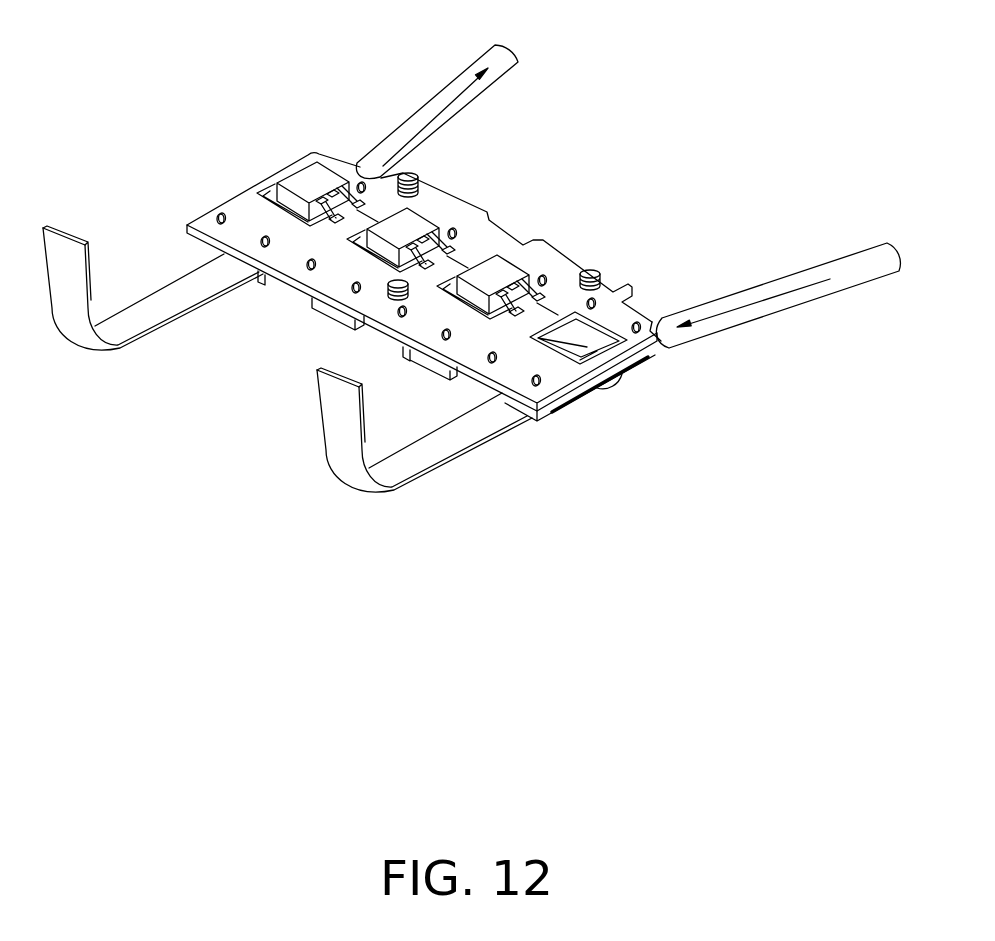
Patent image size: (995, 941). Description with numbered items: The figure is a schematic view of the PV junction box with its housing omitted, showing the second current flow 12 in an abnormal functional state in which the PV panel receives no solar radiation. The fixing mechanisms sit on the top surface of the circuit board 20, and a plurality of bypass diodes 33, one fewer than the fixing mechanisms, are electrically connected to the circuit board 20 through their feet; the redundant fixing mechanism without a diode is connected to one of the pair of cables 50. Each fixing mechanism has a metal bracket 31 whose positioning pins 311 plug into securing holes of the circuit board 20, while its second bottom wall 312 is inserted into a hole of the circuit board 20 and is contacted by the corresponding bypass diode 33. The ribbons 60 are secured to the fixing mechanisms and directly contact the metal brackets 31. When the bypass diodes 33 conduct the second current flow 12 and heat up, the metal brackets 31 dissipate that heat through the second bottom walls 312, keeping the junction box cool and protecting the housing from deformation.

The insertion direction of cable 12 is at (415, 137).
The circuit board 20 is at (560, 267).
The metal bracket 31 is at (560, 403).
The positioning pins 311 is at (665, 346).
The second bottom wall 312 is at (593, 330).
The bypass diodes 33 is at (502, 270).
The cables 50 is at (428, 102).
The ribbons 60 is at (343, 463).